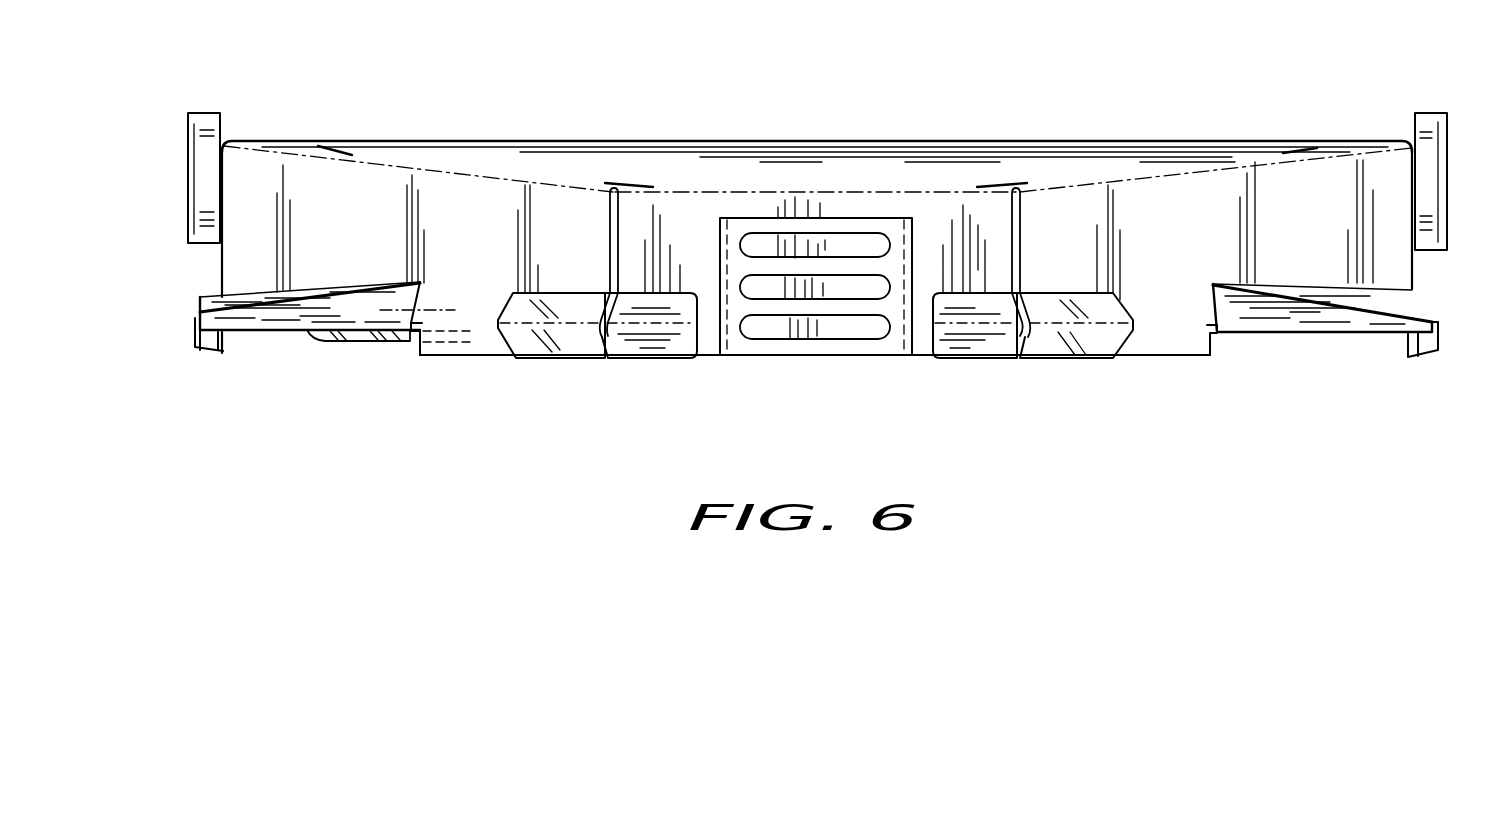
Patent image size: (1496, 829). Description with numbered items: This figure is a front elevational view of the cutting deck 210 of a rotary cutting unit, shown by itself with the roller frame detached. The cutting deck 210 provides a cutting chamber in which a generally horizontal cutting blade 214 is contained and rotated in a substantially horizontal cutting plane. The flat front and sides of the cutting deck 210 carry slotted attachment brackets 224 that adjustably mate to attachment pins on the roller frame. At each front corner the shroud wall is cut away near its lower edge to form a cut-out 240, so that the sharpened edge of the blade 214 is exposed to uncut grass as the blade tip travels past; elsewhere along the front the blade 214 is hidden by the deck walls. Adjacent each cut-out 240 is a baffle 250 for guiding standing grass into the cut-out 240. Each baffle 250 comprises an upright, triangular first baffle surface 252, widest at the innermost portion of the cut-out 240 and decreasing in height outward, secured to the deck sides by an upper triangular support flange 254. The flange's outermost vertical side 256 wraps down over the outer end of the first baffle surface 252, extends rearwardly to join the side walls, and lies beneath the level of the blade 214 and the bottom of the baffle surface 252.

The cutting deck 210 is at (835, 138).
The slotted attachment bracket 224 is at (219, 116).
The baffle 250 is at (347, 279).
The first baffle surface 252 is at (288, 318).
The upper triangular support flange 254 is at (1391, 303).
The outermost vertical side 256 is at (199, 318).
The cut-out 240 is at (265, 346).
The cutting blade 214 is at (393, 340).